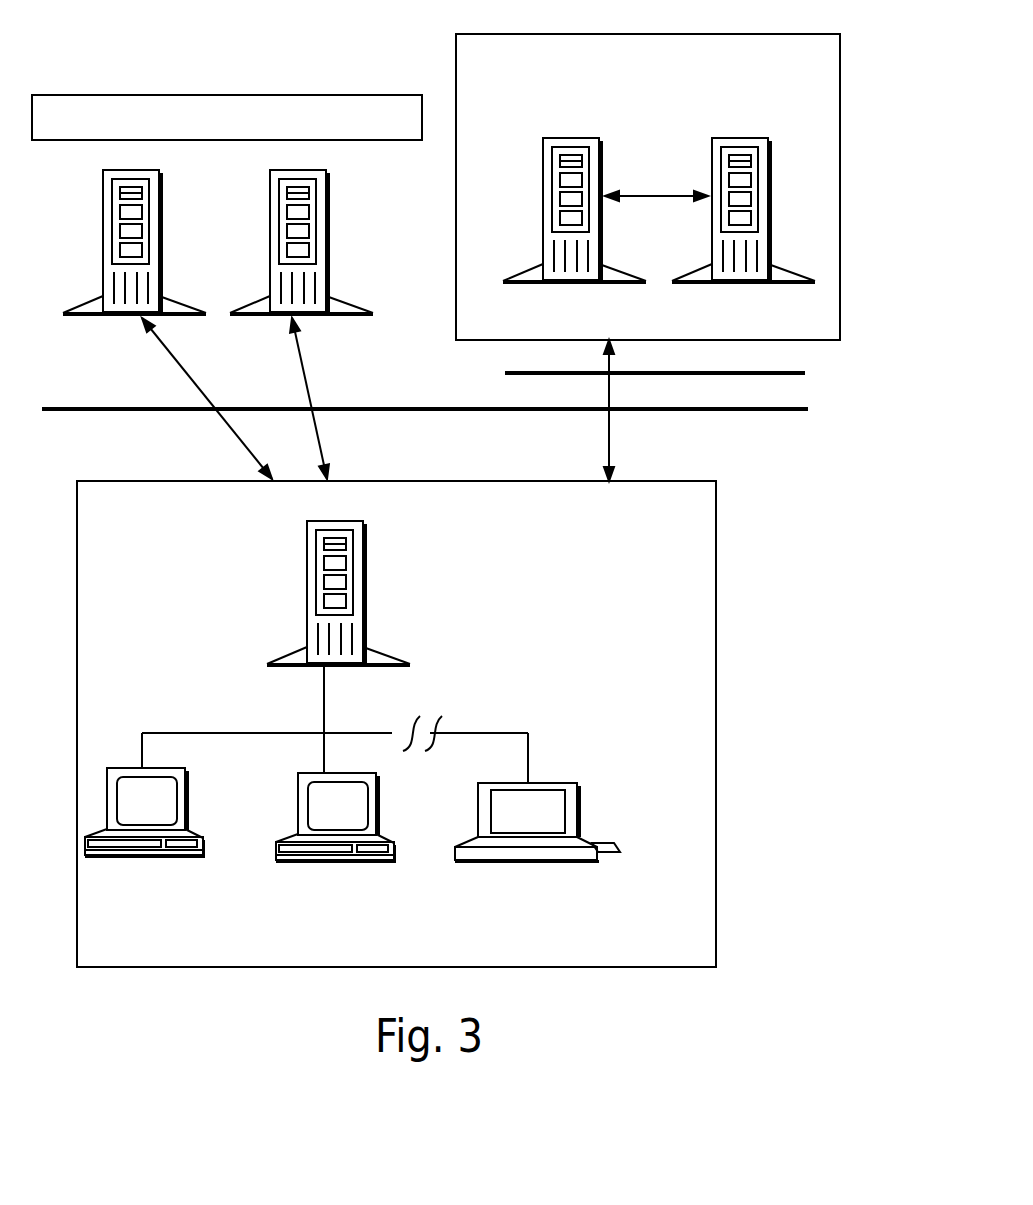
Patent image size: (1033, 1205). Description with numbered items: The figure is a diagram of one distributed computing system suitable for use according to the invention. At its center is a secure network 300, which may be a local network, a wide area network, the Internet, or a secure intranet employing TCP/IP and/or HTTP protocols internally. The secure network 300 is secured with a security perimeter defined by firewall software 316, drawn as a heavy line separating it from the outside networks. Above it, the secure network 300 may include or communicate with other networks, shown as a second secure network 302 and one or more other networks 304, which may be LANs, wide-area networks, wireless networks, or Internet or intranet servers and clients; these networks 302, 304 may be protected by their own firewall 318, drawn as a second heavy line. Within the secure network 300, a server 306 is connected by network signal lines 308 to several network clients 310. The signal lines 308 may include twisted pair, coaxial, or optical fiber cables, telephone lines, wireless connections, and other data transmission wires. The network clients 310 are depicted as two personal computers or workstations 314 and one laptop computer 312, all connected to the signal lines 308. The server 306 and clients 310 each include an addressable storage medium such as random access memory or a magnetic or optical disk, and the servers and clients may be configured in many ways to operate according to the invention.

The secure network 300 is at (287, 548).
The secure network 302 is at (788, 76).
The other network(s) 304 is at (397, 132).
The server 306 is at (375, 593).
The network signal lines 308 is at (335, 724).
The network client 310 is at (382, 839).
The laptop computer 312 is at (567, 842).
The personal computer 314 is at (277, 839).
The firewall software 316 is at (462, 438).
The firewall 318 is at (704, 363).